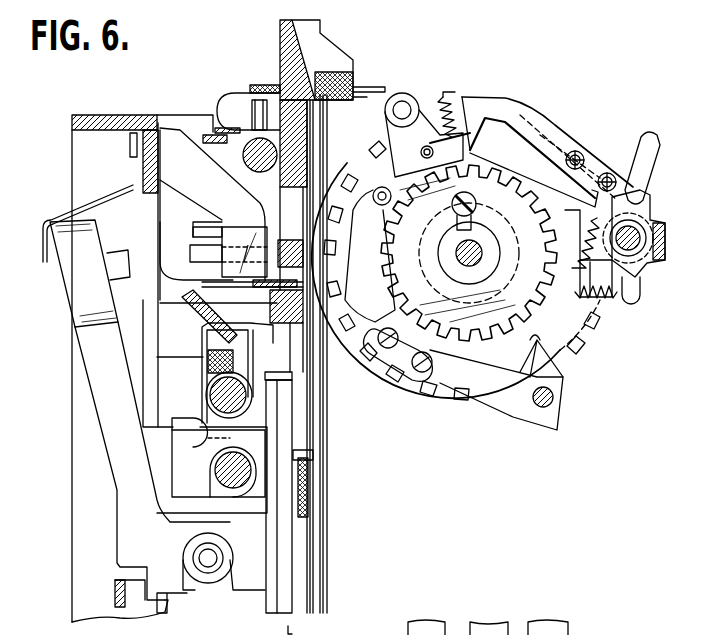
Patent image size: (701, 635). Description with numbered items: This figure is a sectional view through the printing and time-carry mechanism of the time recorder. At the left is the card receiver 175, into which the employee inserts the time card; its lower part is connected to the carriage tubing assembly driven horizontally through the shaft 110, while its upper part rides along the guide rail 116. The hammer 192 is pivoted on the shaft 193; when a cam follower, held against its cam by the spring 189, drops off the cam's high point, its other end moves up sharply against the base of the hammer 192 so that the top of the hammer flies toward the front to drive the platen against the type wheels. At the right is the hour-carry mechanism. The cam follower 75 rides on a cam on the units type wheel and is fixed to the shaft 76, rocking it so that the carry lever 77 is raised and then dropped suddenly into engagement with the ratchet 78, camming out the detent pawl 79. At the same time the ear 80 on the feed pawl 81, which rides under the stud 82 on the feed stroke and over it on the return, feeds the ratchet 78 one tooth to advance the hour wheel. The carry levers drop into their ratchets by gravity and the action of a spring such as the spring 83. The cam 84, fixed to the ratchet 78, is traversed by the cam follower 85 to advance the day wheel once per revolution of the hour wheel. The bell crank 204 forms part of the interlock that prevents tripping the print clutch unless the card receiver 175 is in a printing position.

The card receiver 175 is at (322, 60).
The guide rail 116 is at (232, 158).
The hammer 192 is at (117, 455).
The shaft 110 is at (230, 477).
The spring 189 is at (117, 582).
The shaft 193 is at (208, 560).
The feed pawl 81 is at (437, 97).
The carry lever 77 is at (508, 118).
The cam follower 75 is at (548, 120).
The cam follower 85 is at (588, 210).
The ear 80 is at (380, 162).
The stud 82 is at (373, 190).
The shaft 76 is at (633, 253).
The spring 83 is at (570, 317).
The cam 84 is at (583, 355).
The detent pawl 79 is at (353, 327).
The ratchet 78 is at (466, 313).
The bell crank 204 is at (292, 632).